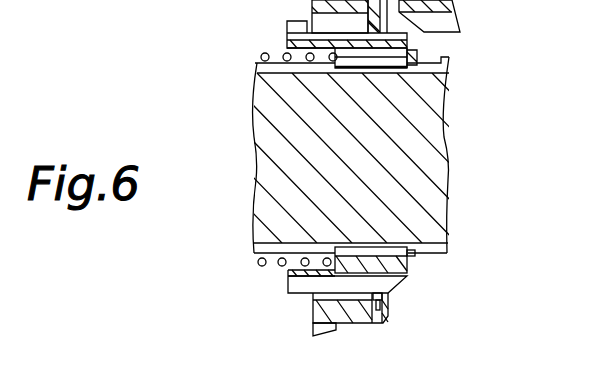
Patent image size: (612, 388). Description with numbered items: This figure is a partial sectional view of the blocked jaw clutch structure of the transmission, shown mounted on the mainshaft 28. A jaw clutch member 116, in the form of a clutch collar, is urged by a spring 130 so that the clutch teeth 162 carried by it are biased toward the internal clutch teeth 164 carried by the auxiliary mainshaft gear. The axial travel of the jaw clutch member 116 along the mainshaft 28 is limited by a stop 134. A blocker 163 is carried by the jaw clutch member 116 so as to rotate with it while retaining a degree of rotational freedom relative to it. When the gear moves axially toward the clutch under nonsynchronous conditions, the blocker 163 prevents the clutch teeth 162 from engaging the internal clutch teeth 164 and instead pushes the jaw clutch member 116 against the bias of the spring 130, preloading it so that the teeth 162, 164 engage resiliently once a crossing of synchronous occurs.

The mainshaft 28 is at (266, 202).
The jaw clutch member 116 is at (289, 61).
The spring 130 is at (311, 61).
The stop 134 is at (418, 47).
The clutch teeth 162 is at (300, 284).
The blocker 163 is at (357, 315).
The internal clutch teeth 164 is at (460, 23).